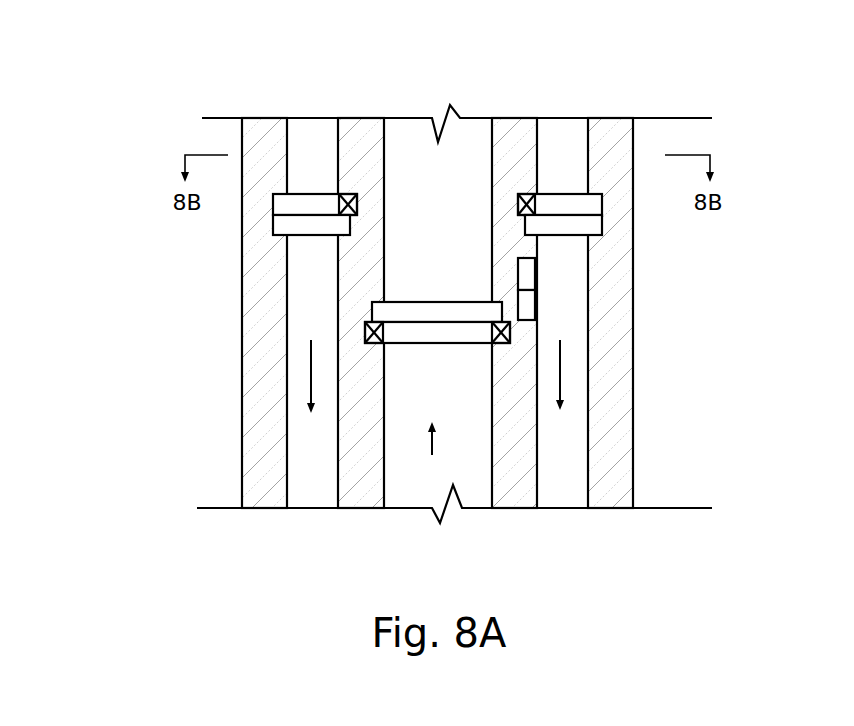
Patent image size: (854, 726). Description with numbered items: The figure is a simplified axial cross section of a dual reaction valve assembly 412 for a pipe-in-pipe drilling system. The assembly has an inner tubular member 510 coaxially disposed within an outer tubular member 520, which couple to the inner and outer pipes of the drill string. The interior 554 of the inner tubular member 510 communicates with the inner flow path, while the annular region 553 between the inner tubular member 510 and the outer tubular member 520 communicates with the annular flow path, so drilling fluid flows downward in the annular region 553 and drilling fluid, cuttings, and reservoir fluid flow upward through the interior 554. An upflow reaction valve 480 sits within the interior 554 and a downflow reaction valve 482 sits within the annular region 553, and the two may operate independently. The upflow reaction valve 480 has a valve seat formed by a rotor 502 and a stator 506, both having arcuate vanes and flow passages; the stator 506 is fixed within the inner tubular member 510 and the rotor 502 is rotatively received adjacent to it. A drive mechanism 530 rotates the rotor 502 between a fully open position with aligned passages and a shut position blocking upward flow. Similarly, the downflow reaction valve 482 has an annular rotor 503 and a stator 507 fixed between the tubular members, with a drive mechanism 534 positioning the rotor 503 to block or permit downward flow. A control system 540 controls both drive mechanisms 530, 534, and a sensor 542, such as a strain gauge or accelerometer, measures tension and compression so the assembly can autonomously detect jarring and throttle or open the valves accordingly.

The dual reaction valve assembly 412 is at (164, 74).
The upflow reaction valve 480 is at (473, 363).
The downflow reaction valve 482 is at (564, 172).
The rotor 502 is at (427, 343).
The rotor 503 is at (313, 193).
The stator 506 is at (441, 302).
The stator 507 is at (308, 237).
The inner tubular member 510 is at (514, 118).
The outer tubular member 520 is at (618, 118).
The drive mechanism 530 is at (510, 330).
The drive mechanism 534 is at (518, 205).
The control system 540 is at (538, 273).
The sensor 542 is at (538, 303).
The annular region 553 is at (327, 142).
The interior 554 is at (468, 142).